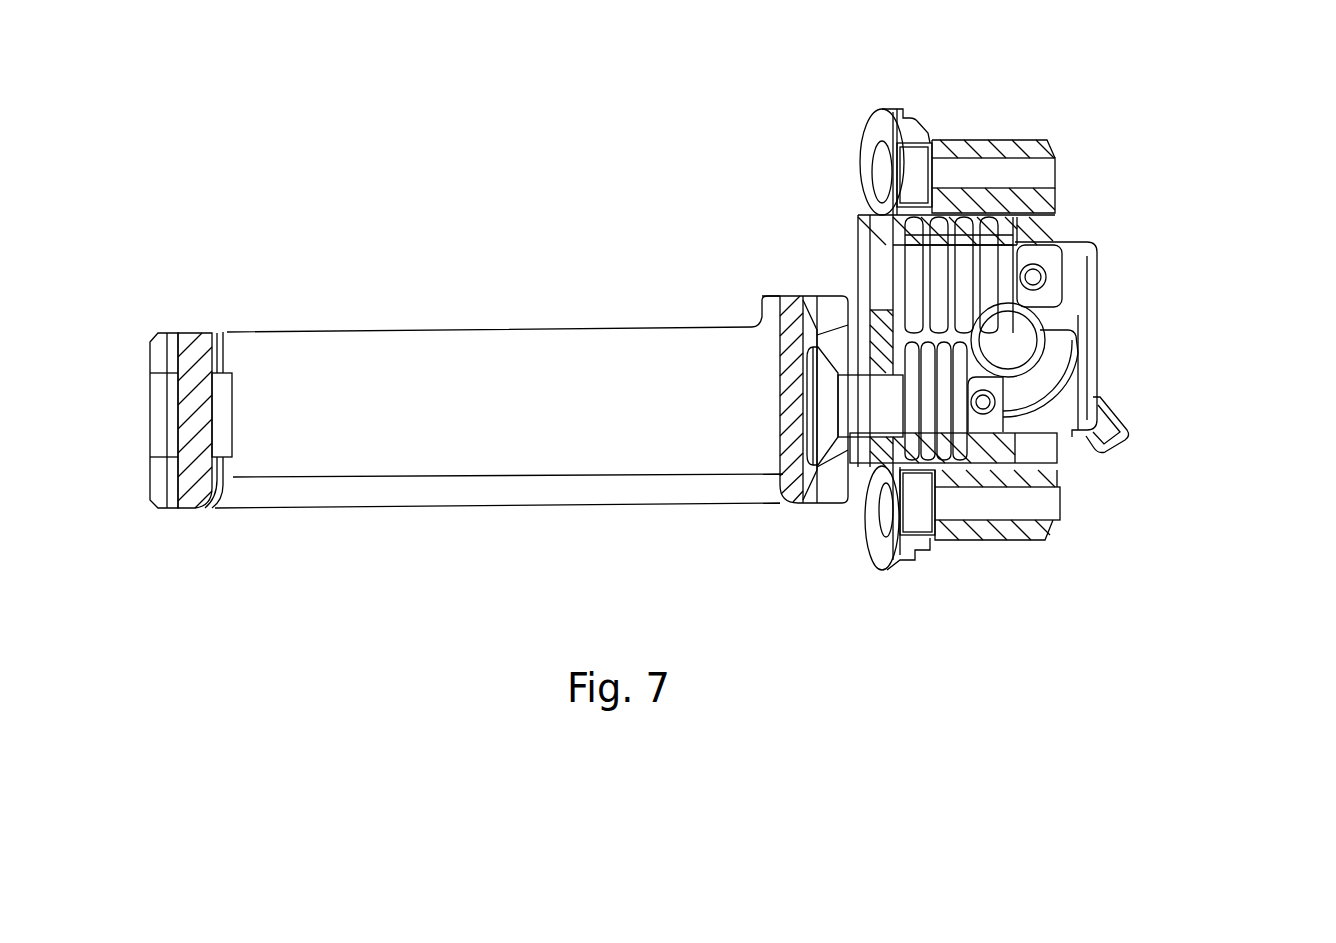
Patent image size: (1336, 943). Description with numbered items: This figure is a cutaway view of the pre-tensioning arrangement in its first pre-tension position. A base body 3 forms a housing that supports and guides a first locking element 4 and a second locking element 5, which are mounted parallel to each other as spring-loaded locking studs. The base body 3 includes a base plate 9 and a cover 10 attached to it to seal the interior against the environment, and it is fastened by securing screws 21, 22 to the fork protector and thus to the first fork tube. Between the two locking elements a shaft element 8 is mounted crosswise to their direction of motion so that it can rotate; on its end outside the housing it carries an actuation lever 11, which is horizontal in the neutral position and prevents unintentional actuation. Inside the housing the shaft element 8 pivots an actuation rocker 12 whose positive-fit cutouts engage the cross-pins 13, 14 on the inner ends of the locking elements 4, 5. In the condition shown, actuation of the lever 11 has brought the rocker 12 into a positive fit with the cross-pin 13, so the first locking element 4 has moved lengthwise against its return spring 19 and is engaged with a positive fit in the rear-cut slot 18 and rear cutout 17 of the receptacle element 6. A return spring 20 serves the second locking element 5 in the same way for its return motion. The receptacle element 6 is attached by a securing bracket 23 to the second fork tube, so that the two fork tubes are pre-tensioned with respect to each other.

The base body 3 is at (947, 550).
The first locking element 4 is at (827, 415).
The second locking element 5 is at (877, 283).
The receptacle element 6 is at (802, 402).
The shaft element 8 is at (1010, 341).
The base plate 9 is at (885, 550).
The cover 10 is at (1027, 530).
The actuation lever 11 is at (985, 402).
The actuation rocker 12 is at (1047, 367).
The cross-pin 13 is at (1008, 418).
The cross-pin 14 is at (1035, 279).
The rear cutout 17 is at (830, 330).
The slot 18 is at (808, 327).
The return spring 19 is at (935, 413).
The return spring 20 is at (987, 267).
The securing screw 21 is at (965, 500).
The securing screw 22 is at (908, 177).
The securing bracket 23 is at (415, 410).